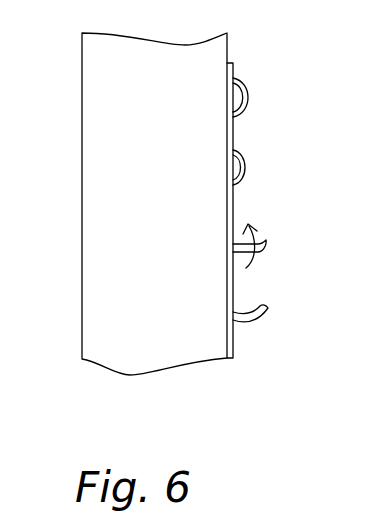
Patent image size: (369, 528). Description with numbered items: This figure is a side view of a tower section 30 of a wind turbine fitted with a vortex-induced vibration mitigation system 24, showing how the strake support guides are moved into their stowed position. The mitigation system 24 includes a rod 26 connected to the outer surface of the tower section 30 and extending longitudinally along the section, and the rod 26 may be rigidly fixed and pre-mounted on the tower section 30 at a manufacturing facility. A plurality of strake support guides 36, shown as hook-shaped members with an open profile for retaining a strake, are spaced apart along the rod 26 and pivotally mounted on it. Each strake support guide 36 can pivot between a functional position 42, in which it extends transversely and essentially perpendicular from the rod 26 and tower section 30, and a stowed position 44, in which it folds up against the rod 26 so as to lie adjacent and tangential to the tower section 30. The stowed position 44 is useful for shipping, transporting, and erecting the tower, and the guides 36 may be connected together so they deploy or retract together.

The vortex-induced vibration (VIV) mitigation system 24 is at (203, 262).
The rod 26 is at (226, 133).
The tower section 30 is at (99, 138).
The strake support guides 36 is at (249, 98).
The functional position 42 is at (282, 236).
The stowed position 44 is at (260, 108).